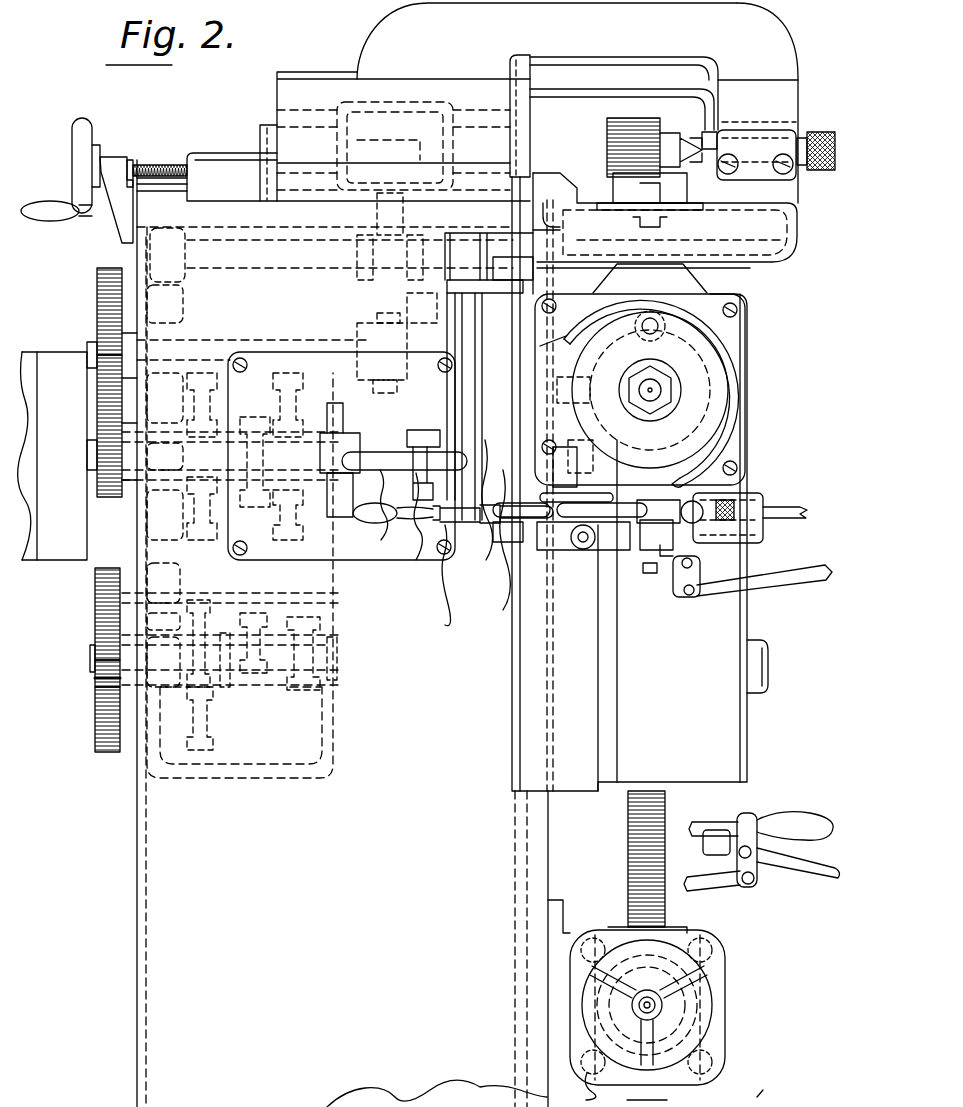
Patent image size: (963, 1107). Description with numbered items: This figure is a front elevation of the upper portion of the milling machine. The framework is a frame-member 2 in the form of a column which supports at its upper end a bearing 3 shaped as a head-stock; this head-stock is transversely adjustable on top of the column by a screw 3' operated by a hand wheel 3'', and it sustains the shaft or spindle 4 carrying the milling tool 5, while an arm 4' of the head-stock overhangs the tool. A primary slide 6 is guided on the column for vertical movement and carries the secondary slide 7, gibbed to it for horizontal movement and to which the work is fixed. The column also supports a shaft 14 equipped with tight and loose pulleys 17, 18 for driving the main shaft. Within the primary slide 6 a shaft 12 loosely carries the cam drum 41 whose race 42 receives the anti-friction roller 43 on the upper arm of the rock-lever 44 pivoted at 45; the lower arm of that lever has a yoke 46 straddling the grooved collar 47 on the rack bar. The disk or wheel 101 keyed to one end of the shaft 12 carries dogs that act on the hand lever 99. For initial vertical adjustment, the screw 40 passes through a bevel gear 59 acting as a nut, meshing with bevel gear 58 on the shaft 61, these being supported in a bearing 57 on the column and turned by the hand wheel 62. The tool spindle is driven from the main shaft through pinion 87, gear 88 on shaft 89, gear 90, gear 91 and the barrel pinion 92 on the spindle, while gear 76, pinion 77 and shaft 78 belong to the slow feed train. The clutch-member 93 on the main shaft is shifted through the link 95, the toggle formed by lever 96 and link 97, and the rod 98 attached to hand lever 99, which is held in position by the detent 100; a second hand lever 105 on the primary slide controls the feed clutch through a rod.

The frame-member 2 is at (135, 945).
The bearing 3 is at (531, 41).
The screw 3' is at (161, 152).
The hand wheel 3'' is at (60, 169).
The shaft or spindle 4 is at (614, 116).
The arm 4' is at (770, 103).
The milling tool 5 is at (633, 116).
The primary slide 6 is at (717, 733).
The secondary slide 7 is at (748, 236).
The shaft 12 is at (662, 391).
The shaft 14 is at (165, 470).
The tight pulley 17 is at (30, 563).
The loose pulley 18 is at (65, 563).
The screw 40 is at (628, 868).
The cam drum 41 is at (705, 450).
The race or way 42 is at (700, 432).
The anti-friction roller 43 is at (583, 410).
The rock-lever 44 is at (607, 405).
The pivot 45 is at (466, 545).
The yoke or fork 46 is at (685, 580).
The collar 47 is at (592, 560).
The bearing 57 is at (563, 930).
The bevel gear 58 is at (698, 1003).
The bevel gear 59 is at (698, 1071).
The shaft 61 is at (705, 1020).
The hand wheel 62 is at (708, 950).
The gear 76 is at (94, 712).
The pinion 77 is at (95, 678).
The shaft 78 is at (93, 651).
The pinion 87 is at (96, 487).
The gear 88 is at (97, 308).
The shaft 89 is at (281, 348).
The gear 90 is at (412, 428).
The gear 91 is at (378, 292).
The barrel pinion 92 is at (418, 102).
The clutch-member 93 is at (333, 480).
The link 95 is at (448, 560).
The lever 96 is at (428, 545).
The link 97 is at (500, 560).
The rod 98 is at (448, 624).
The hand lever 99 is at (503, 630).
The detent 100 is at (755, 532).
The disk or wheel 101 is at (722, 353).
The hand lever 105 is at (800, 507).